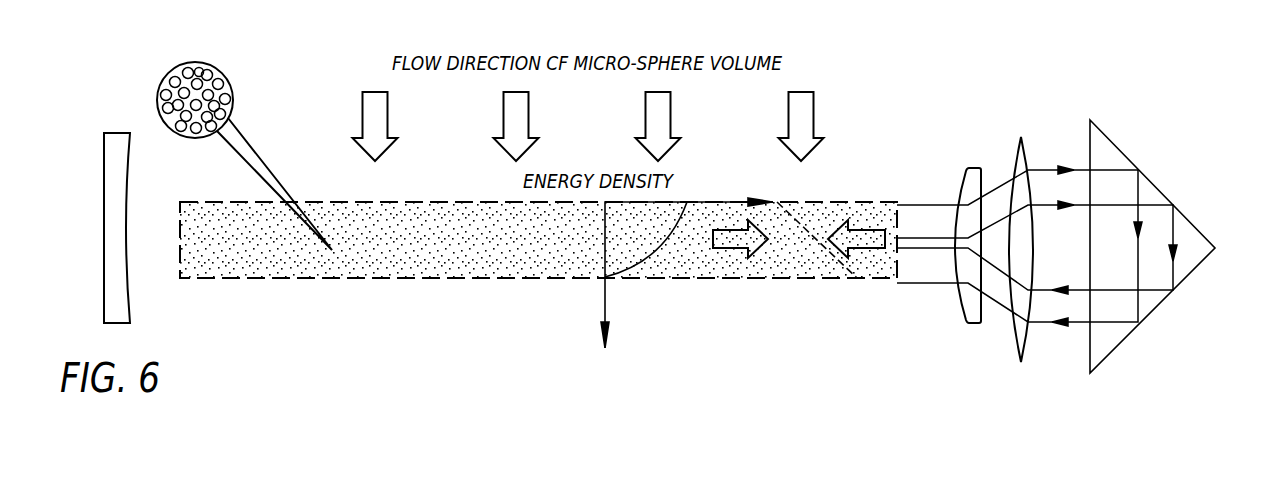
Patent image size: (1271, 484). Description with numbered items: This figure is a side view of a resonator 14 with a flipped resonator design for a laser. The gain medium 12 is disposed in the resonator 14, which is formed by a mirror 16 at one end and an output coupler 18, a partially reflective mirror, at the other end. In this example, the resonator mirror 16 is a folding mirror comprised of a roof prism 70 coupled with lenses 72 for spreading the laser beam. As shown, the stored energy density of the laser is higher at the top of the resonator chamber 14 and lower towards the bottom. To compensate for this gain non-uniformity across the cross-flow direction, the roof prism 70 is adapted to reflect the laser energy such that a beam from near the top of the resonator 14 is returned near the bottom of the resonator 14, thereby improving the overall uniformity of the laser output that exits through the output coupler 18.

The gain medium 12 is at (482, 267).
The resonator 14 is at (972, 55).
The mirror 16 is at (1096, 257).
The output coupler 18 is at (112, 168).
The roof prism 70 is at (1110, 152).
The lenses 72 is at (977, 168).